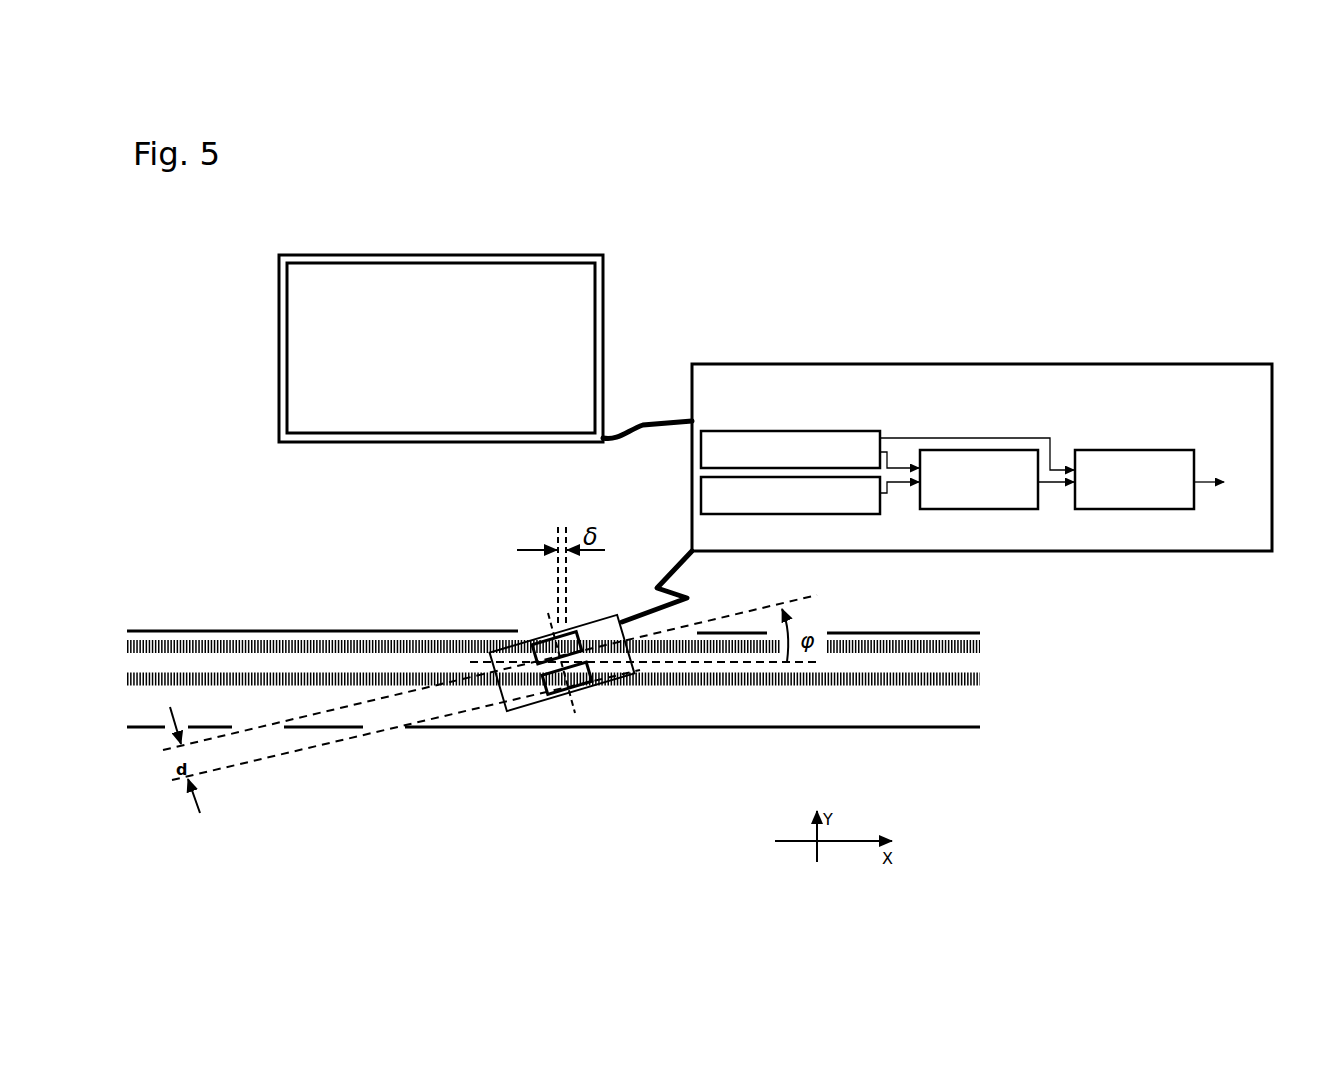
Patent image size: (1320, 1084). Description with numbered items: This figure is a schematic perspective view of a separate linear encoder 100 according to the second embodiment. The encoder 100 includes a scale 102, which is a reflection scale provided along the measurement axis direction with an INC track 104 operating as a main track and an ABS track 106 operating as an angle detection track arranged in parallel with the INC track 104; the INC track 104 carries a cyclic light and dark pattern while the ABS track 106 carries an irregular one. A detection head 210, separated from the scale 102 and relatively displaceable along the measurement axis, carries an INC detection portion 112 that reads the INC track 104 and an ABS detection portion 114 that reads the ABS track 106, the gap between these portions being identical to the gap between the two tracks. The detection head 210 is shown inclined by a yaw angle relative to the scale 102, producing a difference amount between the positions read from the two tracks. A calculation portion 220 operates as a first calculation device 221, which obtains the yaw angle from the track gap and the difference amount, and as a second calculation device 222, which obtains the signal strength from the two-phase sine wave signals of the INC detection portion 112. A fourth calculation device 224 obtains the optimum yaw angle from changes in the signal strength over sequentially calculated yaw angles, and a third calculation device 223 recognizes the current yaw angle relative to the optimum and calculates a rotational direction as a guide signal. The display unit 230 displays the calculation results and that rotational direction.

The encoder 100 is at (505, 668).
The scale 102 is at (208, 627).
The INC track 104 is at (703, 688).
The ABS track 106 is at (292, 641).
The INC detection portion 112 is at (552, 700).
The ABS detection portion 114 is at (542, 638).
The detection head 210 is at (584, 704).
The calculation portion 220 is at (810, 364).
The first calculation device 221 is at (830, 431).
The second calculation device 222 is at (825, 514).
The third calculation device 223 is at (1148, 450).
The fourth calculation device 224 is at (952, 509).
The display unit 230 is at (580, 256).